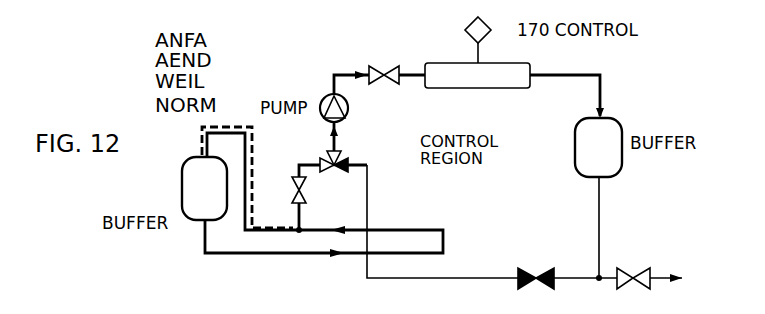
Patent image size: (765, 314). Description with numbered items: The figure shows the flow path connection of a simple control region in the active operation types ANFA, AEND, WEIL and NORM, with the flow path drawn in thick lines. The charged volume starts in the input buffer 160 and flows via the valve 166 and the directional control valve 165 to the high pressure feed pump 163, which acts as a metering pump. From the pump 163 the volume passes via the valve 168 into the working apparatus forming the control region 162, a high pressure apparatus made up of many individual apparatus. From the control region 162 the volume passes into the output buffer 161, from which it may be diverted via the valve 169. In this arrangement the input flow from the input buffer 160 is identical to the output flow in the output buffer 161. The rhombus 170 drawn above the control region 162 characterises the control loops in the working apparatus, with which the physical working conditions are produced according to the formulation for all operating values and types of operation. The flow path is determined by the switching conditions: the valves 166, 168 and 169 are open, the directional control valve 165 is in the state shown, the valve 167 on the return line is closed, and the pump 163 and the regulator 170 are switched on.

The input buffer 160 is at (192, 197).
The output buffer 161 is at (585, 135).
The control region 162 is at (500, 82).
The high pressure feed pump 163 is at (348, 108).
The directional control valve 165 is at (347, 156).
The valve 166 is at (303, 193).
The valve 167 is at (528, 272).
The valve 168 is at (390, 69).
The valve 169 is at (627, 273).
The rhombus 170 is at (514, 27).